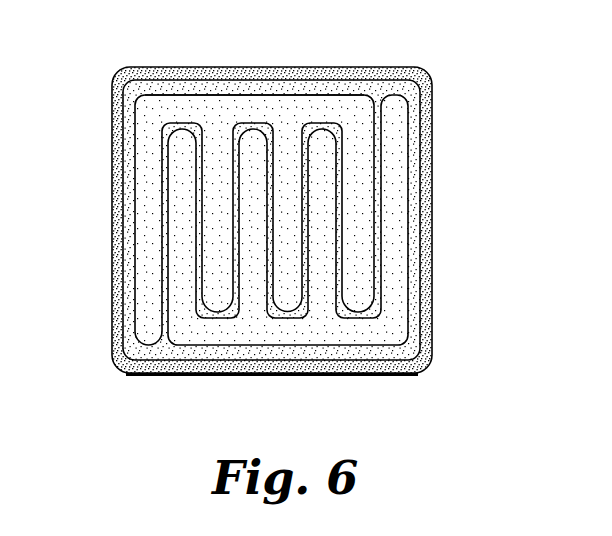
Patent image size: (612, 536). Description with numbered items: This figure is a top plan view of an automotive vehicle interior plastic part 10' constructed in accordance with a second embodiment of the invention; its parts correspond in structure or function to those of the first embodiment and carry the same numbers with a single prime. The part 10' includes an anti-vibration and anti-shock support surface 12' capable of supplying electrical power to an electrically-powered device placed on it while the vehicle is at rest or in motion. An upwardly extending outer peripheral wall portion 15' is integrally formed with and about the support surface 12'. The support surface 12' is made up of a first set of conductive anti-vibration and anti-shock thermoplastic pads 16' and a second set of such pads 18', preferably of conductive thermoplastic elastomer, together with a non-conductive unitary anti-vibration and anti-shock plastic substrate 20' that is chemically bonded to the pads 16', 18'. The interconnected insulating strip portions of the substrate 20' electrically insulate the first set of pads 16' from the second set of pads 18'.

The automotive interior plastic part 10' is at (272, 189).
The anti-vibration and anti-shock support surface 12' is at (231, 64).
The outer peripheral wall portion 15' is at (272, 403).
The first set of conductive anti-vibration and anti-shock thermoplastic pads 16' is at (206, 220).
The second set of conductive anti-vibration and anti-shock thermoplastic pads 18' is at (341, 220).
The insulating plastic substrate 20' is at (306, 196).